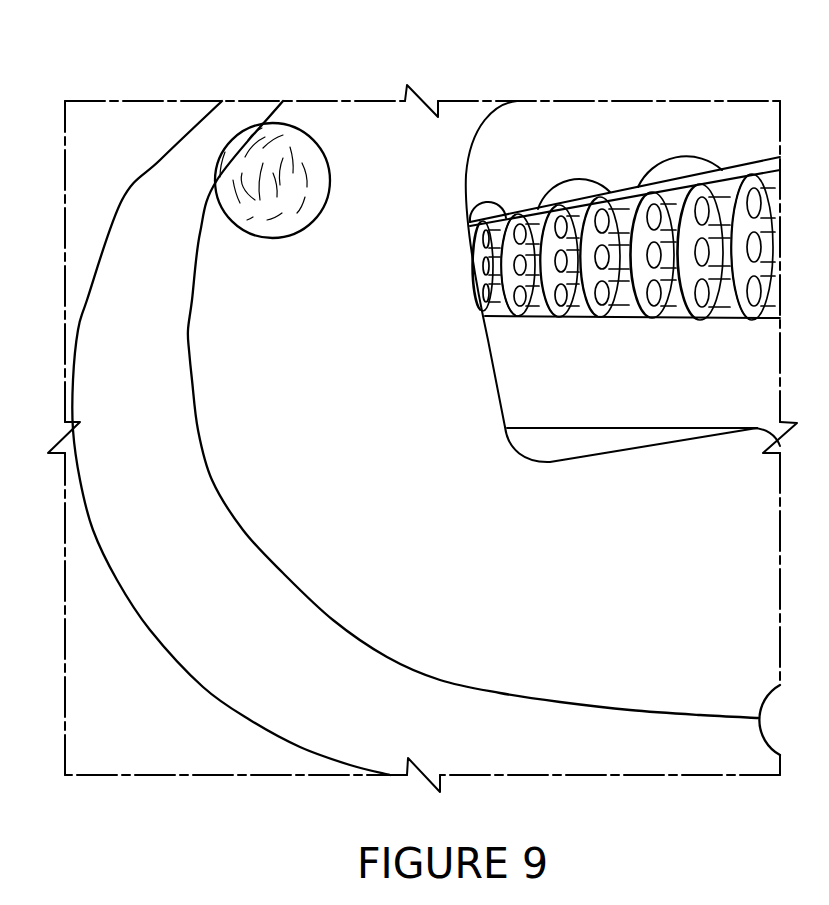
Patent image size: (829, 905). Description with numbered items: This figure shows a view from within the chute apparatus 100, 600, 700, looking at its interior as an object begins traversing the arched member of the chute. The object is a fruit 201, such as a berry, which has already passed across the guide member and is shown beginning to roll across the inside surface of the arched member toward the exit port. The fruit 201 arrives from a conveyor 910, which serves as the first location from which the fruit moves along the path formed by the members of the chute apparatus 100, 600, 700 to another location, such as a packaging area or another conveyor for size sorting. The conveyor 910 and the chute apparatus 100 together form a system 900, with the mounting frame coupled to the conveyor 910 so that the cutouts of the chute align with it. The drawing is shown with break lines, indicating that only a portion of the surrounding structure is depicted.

The mobility assistance device 100 is at (416, 404).
The mobility assistance device 600 is at (416, 404).
The mobility assistance device 700 is at (127, 93).
The curved housing band 900 is at (265, 90).
The ball 201 is at (325, 230).
The roller disc assembly 910 is at (696, 195).